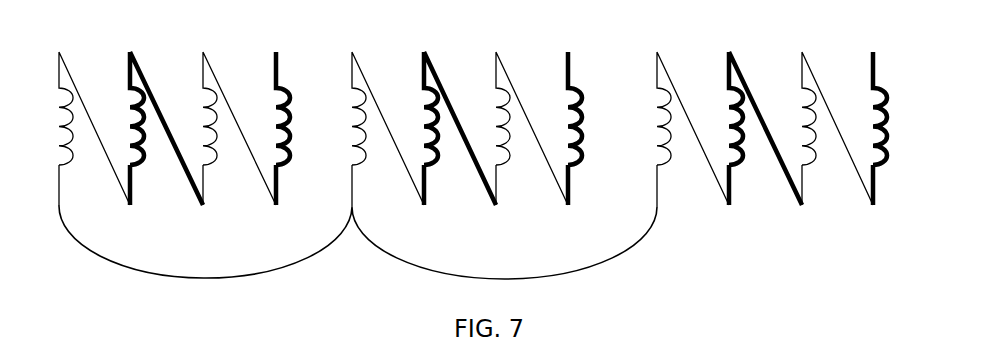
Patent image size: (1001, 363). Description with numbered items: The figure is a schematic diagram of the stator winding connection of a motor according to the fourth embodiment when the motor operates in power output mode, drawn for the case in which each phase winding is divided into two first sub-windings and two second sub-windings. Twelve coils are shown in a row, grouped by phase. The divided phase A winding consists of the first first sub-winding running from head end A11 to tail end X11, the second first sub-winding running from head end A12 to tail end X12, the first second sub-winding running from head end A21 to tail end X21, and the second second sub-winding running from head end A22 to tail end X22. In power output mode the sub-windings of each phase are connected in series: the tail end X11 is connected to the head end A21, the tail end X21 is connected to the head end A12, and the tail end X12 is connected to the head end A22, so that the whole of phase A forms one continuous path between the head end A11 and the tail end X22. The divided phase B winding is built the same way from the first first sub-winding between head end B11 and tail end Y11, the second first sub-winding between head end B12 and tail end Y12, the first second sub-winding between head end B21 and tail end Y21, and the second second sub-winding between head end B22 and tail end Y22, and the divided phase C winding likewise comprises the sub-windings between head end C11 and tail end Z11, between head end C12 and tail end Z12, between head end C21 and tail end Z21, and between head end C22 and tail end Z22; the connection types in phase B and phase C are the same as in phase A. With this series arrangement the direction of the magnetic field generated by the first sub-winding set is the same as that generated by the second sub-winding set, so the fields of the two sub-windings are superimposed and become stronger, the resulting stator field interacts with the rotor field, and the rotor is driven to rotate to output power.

The head end of the 2nd second sub-winding A22 is at (73, 114).
The head end of the 2nd first sub-winding A12 is at (156, 114).
The head end of the 1st second sub-winding A21 is at (231, 114).
The head end of the 1st first sub-winding A11 is at (279, 94).
The head end of the 2nd second sub-winding of phase B B22 is at (377, 114).
The head end of the 2nd first sub-winding of phase B B12 is at (451, 114).
The head end of the 1st second sub-winding of phase B B21 is at (528, 114).
The head end of the 1st first sub-winding of phase B B11 is at (570, 94).
The head end of the 2nd second sub-winding of phase C C22 is at (689, 114).
The head end of the 2nd first sub-winding of phase C C12 is at (751, 114).
The head end of the 1st second sub-winding of phase C C21 is at (827, 114).
The head end of the 1st first sub-winding of phase C C11 is at (879, 94).
The tail end of the 2nd second sub-winding X22 is at (36, 185).
The tail end of the 2nd first sub-winding X12 is at (128, 208).
The tail end of the 1st second sub-winding X21 is at (206, 208).
The tail end of the 1st first sub-winding X11 is at (280, 208).
The tail end of the 2nd second sub-winding of phase B Y22 is at (328, 186).
The tail end of the 2nd first sub-winding of phase B Y12 is at (424, 208).
The tail end of the 1st second sub-winding of phase B Y21 is at (502, 208).
The tail end of the 1st first sub-winding of phase B Y11 is at (574, 208).
The tail end of the 2nd second sub-winding of phase C Z22 is at (633, 186).
The tail end of the 2nd first sub-winding of phase C Z12 is at (727, 208).
The tail end of the 1st second sub-winding of phase C Z21 is at (807, 208).
The tail end of the 1st first sub-winding of phase C Z11 is at (880, 208).